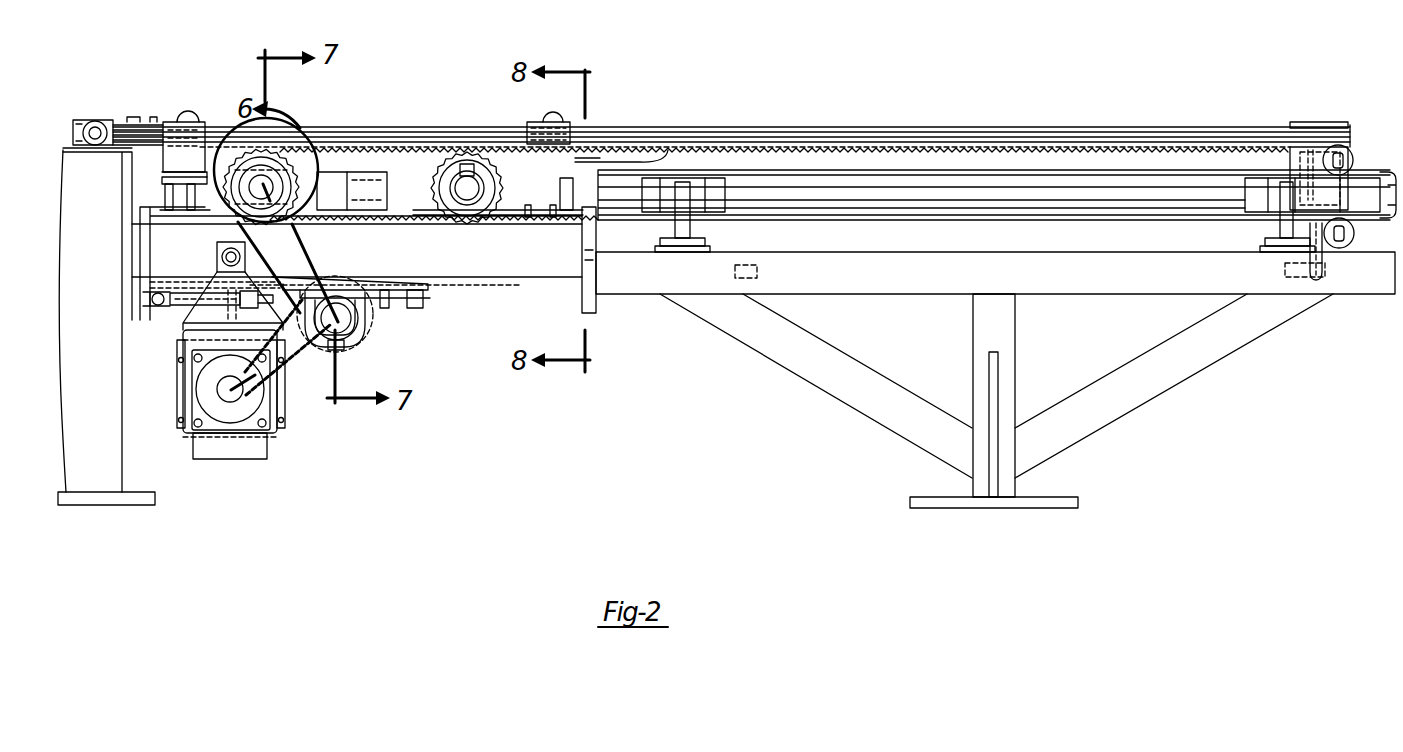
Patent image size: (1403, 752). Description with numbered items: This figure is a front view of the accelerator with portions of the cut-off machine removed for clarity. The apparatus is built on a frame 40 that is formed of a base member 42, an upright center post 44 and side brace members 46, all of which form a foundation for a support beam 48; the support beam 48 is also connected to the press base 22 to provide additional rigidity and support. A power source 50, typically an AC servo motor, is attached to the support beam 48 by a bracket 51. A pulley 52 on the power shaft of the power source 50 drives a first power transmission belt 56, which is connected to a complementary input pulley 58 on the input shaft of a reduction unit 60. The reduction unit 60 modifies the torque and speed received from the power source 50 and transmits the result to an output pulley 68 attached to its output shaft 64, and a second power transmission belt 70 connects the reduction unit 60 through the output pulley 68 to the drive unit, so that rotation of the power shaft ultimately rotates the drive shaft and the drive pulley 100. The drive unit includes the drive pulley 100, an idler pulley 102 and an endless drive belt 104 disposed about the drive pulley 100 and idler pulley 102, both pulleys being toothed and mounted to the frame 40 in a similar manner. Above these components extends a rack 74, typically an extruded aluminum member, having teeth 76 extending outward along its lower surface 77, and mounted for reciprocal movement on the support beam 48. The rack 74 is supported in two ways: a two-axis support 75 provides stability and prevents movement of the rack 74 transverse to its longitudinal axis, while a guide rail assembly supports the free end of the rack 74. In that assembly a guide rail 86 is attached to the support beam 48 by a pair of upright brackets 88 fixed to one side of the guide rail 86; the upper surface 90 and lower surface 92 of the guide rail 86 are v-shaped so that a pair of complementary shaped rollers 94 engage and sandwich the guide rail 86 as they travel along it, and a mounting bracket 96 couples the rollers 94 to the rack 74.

The press base 22 is at (92, 437).
The frame 40 is at (996, 406).
The base member 42 is at (1098, 483).
The upright center post 44 is at (998, 330).
The side brace members 46 is at (802, 367).
The support beam 48 is at (517, 257).
The power source 50 is at (187, 433).
The bracket 51 is at (190, 318).
The pulley 52 is at (228, 420).
The first power transmission belt 56 is at (292, 380).
The input pulley 58 is at (357, 348).
The reduction unit 60 is at (360, 305).
The output shaft 64 is at (322, 350).
The output pulley 68 is at (373, 320).
The second power transmission belt 70 is at (303, 170).
The rack 74 is at (720, 127).
The two-axis support 75 is at (533, 121).
The teeth 76 is at (836, 161).
The lower surface 77 is at (836, 162).
The guide rail 86 is at (915, 207).
The upright brackets 88 is at (687, 227).
The upper surface 90 is at (1390, 174).
The lower surface 92 is at (1325, 272).
The rollers 94 is at (1353, 147).
The mounting bracket 96 is at (1300, 160).
The drive pulley 100 is at (188, 118).
The idler pulley 102 is at (668, 150).
The endless drive belt 104 is at (385, 158).